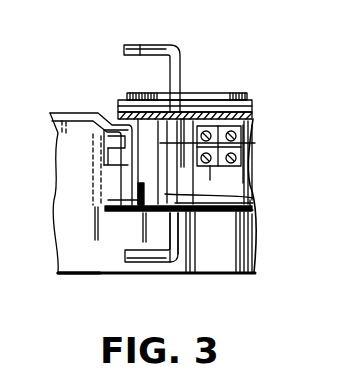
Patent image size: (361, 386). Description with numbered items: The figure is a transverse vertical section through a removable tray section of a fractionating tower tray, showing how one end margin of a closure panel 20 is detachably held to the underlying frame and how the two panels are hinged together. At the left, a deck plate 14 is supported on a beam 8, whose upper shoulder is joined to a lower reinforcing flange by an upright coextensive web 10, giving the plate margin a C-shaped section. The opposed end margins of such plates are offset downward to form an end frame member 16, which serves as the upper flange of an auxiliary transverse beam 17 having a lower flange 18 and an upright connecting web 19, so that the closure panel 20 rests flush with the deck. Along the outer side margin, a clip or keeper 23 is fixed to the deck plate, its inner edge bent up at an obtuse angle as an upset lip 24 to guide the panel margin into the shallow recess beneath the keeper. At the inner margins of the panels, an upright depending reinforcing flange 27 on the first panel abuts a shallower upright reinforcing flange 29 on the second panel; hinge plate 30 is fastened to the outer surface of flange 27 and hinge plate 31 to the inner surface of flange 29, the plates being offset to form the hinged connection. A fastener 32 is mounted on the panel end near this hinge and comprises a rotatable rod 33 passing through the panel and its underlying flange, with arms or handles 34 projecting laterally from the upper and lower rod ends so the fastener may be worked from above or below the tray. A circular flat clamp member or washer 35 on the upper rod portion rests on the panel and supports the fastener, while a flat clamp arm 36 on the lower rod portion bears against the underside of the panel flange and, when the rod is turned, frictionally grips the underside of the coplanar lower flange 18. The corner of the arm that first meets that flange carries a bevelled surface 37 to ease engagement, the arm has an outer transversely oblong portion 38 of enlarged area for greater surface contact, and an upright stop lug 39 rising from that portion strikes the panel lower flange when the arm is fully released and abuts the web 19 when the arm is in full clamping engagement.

The beam 8 is at (66, 276).
The upright coextensive web 10 is at (256, 243).
The adjacent deck plate 14 is at (62, 110).
The end frame member 16 is at (118, 135).
The auxiliary transverse beam 17 is at (130, 178).
The lower flange 18 is at (110, 203).
The upright connecting web 19 is at (120, 150).
The closure panel 20 is at (254, 114).
The clip or keeper 23 is at (114, 112).
The upset lip 24 is at (248, 100).
The upright depending reinforcing flange 27 is at (243, 183).
The upright reinforcing flange 29 is at (250, 154).
The hinge plate 30 is at (212, 168).
The hinge plate 31 is at (242, 137).
The fastener 32 is at (181, 50).
The rotatable rod 33 is at (168, 80).
The arm or handle 34 is at (140, 46).
The circular flat clamp member or washer 35 is at (188, 105).
The flat clamp arm 36 is at (188, 242).
The bevelled corner 37 is at (98, 218).
The outer transversely oblong portion 38 is at (130, 212).
The stop lug 39 is at (252, 200).